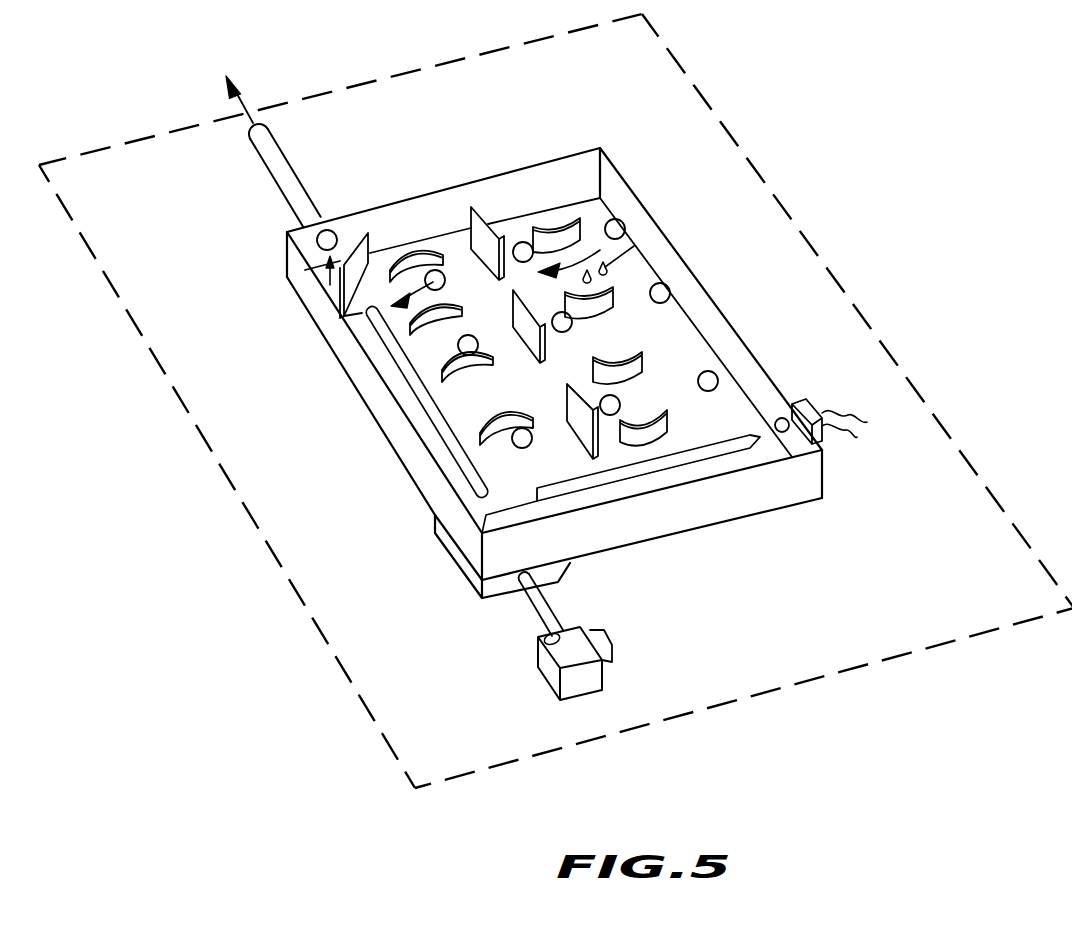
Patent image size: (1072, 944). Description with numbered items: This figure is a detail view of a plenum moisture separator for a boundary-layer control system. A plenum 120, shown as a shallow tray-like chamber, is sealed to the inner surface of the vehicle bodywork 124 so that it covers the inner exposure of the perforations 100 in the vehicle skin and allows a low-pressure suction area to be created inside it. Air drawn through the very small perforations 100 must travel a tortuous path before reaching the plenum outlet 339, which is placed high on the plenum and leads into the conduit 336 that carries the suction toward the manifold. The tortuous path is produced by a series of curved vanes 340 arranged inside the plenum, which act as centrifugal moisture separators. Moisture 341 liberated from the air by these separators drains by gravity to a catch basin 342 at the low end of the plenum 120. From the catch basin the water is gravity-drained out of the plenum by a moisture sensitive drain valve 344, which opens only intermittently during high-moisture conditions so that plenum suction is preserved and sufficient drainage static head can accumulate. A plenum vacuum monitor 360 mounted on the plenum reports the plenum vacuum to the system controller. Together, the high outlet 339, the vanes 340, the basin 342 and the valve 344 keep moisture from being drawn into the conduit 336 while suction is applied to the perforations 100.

The perforations 100 is at (667, 287).
The plenum 120 is at (287, 262).
The vehicle bodywork 124 is at (913, 457).
The conduit 336 is at (283, 160).
The plenum outlet 339 is at (340, 223).
The curved vanes 340 is at (480, 207).
The moisture 341 is at (617, 229).
The catch basin 342 is at (447, 556).
The moisture sensitive drain valve 344 is at (560, 638).
The plenum vacuum monitor 360 is at (822, 440).